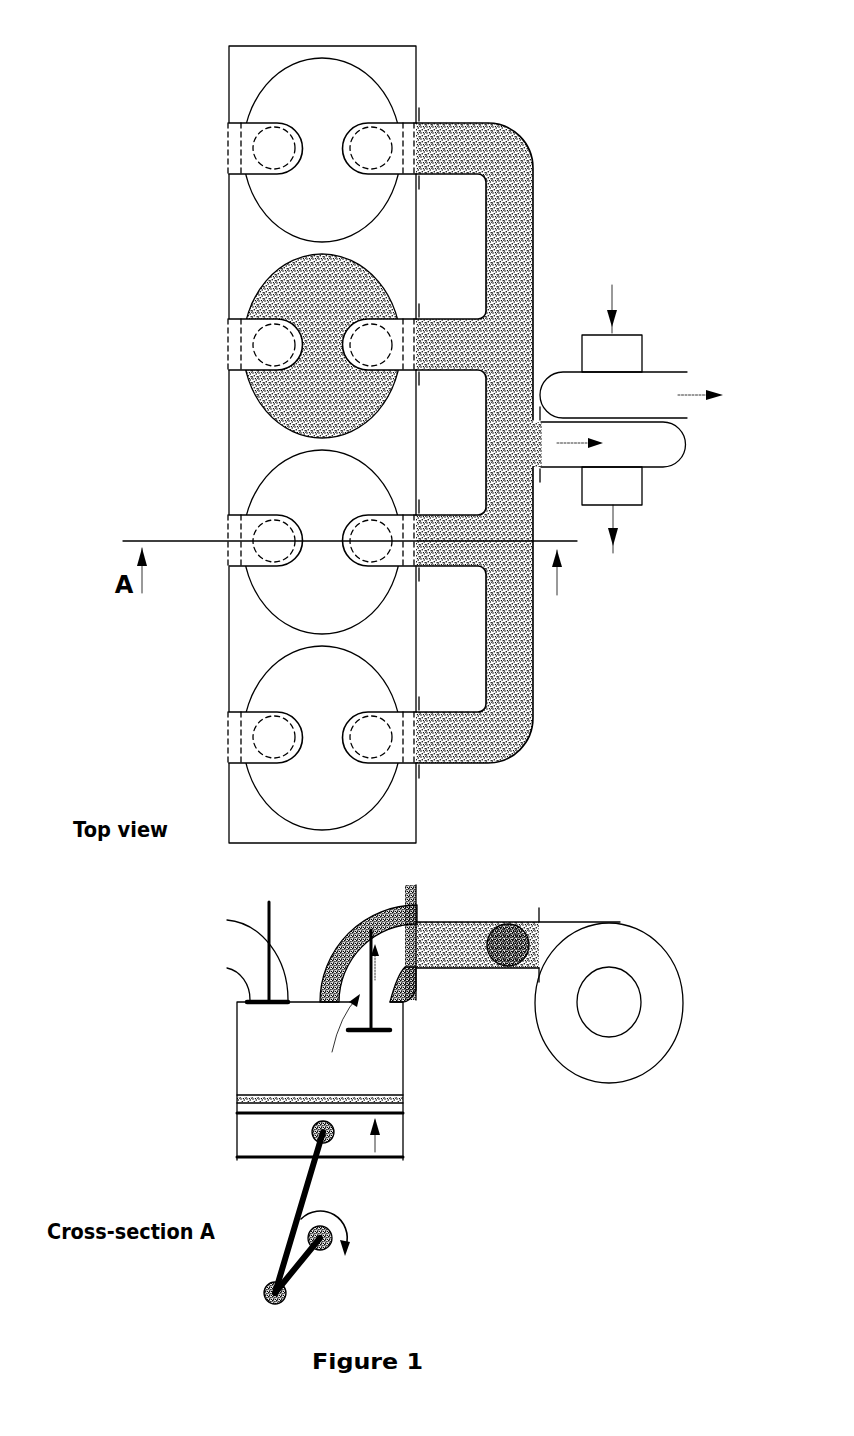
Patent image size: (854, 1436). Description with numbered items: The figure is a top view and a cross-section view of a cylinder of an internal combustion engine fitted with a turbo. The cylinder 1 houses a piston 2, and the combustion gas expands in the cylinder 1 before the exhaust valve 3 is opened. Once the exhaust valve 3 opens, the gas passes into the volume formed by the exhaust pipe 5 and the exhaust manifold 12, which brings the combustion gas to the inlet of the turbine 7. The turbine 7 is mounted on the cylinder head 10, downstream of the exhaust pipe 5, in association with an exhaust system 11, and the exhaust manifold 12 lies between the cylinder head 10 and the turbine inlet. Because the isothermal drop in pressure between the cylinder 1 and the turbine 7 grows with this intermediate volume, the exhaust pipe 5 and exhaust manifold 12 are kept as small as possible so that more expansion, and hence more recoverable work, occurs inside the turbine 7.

The cylinder 1 is at (320, 1081).
The piston 2 is at (320, 1126).
The exhaust valve 3 is at (386, 1044).
The exhaust pipe 5 is at (322, 541).
The turbine 7 is at (629, 727).
The cylinder head 10 is at (397, 917).
The exhaust system 11 is at (609, 661).
The exhaust manifold 12 is at (479, 545).